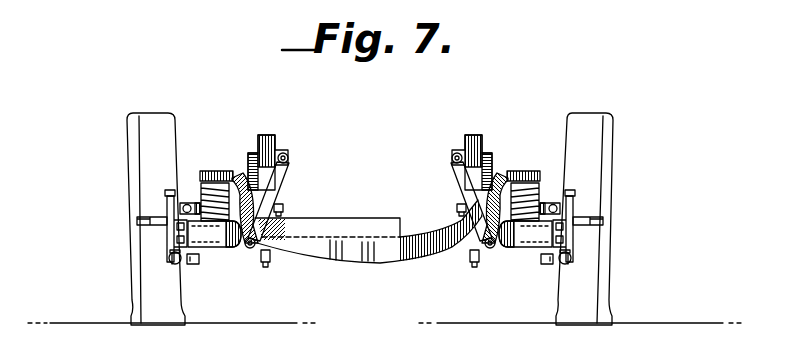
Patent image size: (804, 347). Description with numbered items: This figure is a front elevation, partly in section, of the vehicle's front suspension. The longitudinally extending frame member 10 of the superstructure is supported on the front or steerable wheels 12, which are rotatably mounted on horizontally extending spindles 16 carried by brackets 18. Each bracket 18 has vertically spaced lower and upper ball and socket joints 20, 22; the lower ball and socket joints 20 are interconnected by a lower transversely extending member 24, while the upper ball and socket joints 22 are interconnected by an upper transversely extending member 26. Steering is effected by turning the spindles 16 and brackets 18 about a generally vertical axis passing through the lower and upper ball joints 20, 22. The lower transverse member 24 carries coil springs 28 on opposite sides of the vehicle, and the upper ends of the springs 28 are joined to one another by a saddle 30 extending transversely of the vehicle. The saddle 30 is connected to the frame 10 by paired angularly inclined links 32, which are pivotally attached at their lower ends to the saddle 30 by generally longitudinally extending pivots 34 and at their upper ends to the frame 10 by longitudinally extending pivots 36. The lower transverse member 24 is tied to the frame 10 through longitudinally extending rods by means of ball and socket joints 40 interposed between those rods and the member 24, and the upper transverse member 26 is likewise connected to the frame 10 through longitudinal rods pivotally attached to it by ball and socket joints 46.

The frame member 10 is at (477, 140).
The front or steerable wheels 12 is at (157, 137).
The spindles 16 is at (143, 223).
The brackets 18 is at (167, 200).
The lower ball and socket joints 20 is at (170, 260).
The upper ball and socket joints 22 is at (167, 197).
The lower transversely extending member 24 is at (217, 233).
The upper transversely extending member 26 is at (190, 200).
The coil springs 28 is at (218, 173).
The saddle 30 is at (227, 173).
The angularly inclined links 32 is at (290, 168).
The pivots 34 is at (245, 250).
The pivots 36 is at (286, 158).
The ball and socket joints 40 is at (267, 264).
The ball and socket joints 46 is at (282, 210).